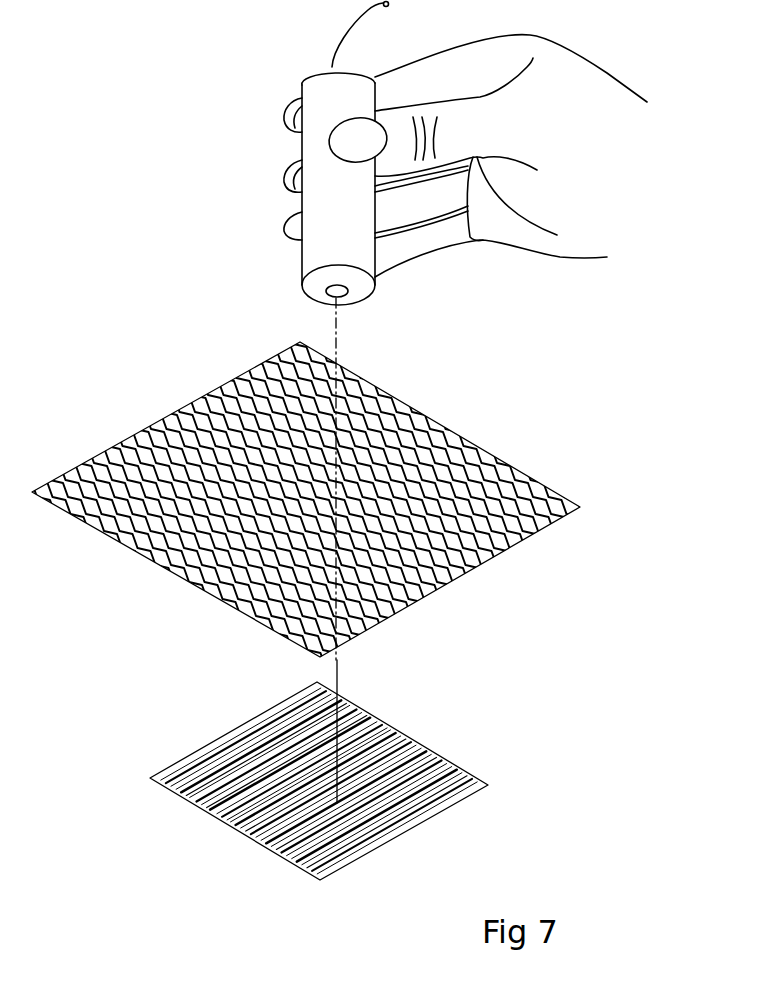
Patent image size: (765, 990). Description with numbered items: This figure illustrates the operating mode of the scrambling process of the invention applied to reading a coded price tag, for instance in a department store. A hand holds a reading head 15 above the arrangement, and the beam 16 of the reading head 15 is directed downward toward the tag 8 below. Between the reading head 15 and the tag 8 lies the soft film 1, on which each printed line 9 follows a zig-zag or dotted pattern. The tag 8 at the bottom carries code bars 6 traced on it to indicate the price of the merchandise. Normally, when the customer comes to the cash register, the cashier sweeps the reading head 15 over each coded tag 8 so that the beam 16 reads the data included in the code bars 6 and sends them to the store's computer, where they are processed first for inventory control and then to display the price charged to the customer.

The soft film 1 is at (382, 508).
The line 9 is at (225, 543).
The tag 8 is at (319, 783).
The code bar 6 is at (350, 782).
The reading head 15 is at (322, 257).
The beam 16 is at (336, 315).